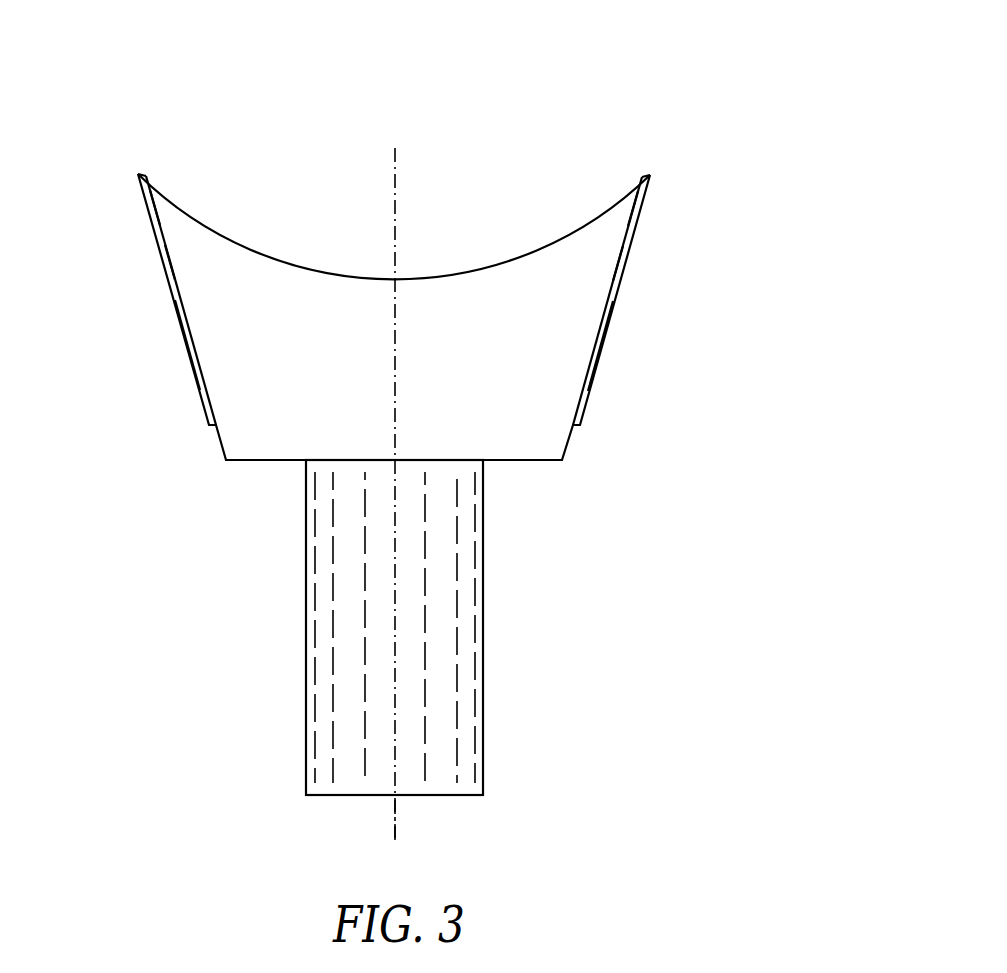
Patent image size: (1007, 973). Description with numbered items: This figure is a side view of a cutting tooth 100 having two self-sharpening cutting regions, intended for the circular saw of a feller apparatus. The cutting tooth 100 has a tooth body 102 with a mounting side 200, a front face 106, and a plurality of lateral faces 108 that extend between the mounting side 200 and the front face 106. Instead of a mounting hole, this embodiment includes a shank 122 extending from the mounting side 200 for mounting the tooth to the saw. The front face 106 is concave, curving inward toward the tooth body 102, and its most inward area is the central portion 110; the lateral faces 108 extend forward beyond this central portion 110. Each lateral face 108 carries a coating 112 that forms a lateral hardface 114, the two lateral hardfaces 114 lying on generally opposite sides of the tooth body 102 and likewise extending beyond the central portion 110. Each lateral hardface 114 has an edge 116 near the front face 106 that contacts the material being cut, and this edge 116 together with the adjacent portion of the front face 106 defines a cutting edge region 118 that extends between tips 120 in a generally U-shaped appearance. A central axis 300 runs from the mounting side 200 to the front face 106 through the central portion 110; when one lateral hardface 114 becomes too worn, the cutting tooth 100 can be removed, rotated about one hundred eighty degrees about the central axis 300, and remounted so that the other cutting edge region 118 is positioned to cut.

The cutting tooth 100 is at (738, 55).
The tooth body 102 is at (203, 222).
The front face 106 is at (540, 248).
The lateral faces 108 is at (140, 203).
The central portion 110 is at (397, 278).
The coating 112 is at (182, 320).
The lateral hardface 114 is at (157, 262).
The edge 116 is at (138, 175).
The cutting edge region 118 is at (140, 174).
The tips 120 is at (142, 174).
The shank 122 is at (468, 560).
The mounting side 200 is at (297, 462).
The central axis 300 is at (397, 818).